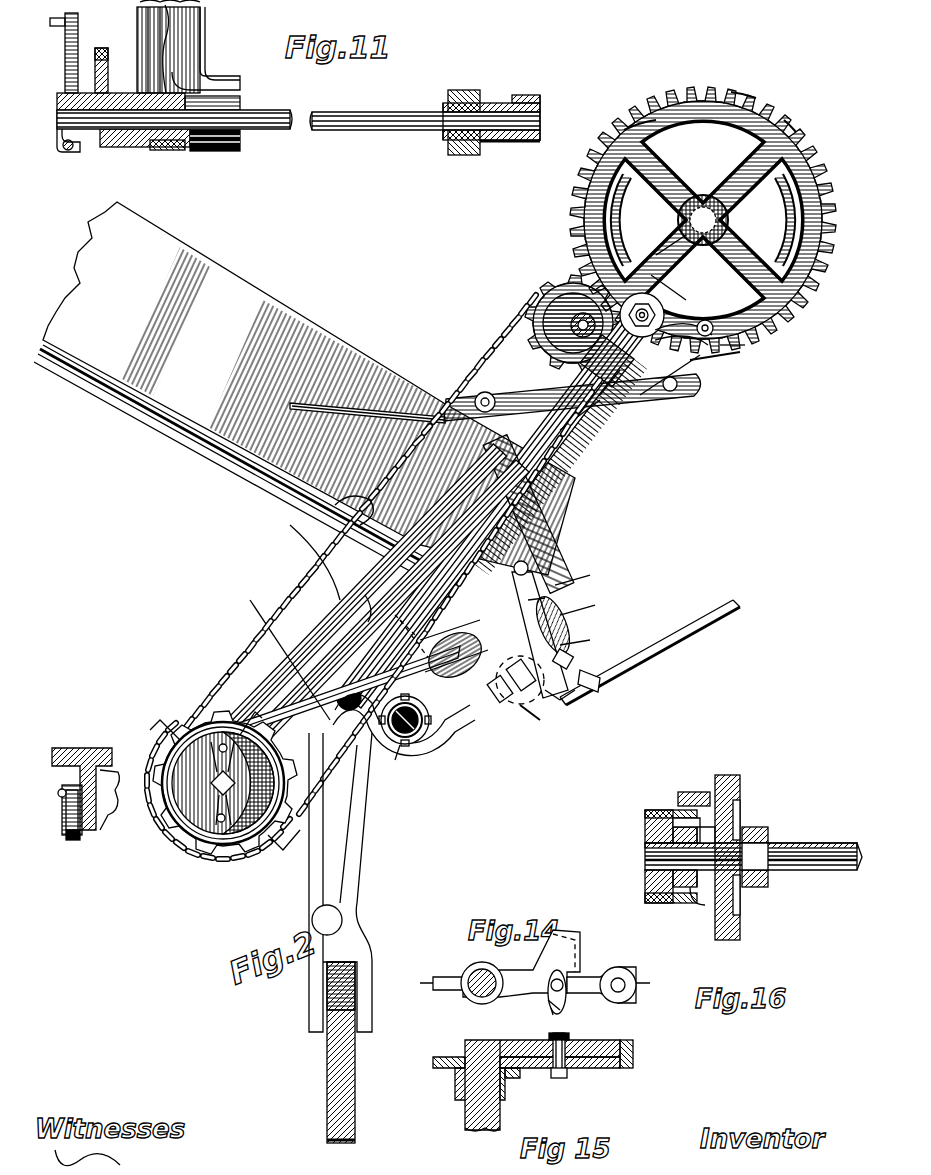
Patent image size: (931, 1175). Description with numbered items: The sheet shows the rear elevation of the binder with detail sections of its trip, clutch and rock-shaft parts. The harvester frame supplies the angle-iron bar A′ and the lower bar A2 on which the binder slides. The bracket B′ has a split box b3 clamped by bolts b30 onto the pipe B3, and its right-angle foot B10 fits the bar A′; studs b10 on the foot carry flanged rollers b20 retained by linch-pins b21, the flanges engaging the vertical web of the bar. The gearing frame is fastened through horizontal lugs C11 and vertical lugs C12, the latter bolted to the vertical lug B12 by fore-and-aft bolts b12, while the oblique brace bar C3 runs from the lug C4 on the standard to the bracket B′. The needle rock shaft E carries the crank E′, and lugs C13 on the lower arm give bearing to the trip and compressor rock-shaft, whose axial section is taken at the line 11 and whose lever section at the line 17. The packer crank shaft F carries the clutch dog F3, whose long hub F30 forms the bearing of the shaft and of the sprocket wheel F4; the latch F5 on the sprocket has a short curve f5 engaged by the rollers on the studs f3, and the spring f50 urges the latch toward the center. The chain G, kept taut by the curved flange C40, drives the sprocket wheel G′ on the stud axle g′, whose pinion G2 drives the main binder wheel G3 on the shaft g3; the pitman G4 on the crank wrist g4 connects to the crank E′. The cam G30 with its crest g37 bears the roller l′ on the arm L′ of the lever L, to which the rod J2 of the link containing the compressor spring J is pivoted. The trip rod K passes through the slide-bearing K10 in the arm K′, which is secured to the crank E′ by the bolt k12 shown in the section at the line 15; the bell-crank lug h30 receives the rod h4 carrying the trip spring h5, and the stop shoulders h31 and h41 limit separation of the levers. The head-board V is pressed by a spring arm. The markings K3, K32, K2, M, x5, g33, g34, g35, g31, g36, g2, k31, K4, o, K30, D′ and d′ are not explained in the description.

In FIG. 11, the post of clutch bracket K3 is at (78, 40).
In FIG. 2, the post of clutch bracket K3 is at (568, 636).
In FIG. 11, the arm K′ is at (108, 62).
In FIG. 14, the arm K′ is at (512, 992).
In FIG. 15, the arm K′ is at (514, 1070).
In FIG. 11, the section line 17 is at (158, 165).
In FIG. 11, the clutch base K32 is at (128, 137).
In FIG. 11, the lugs C13 is at (173, 152).
In FIG. 2, the lugs C13 is at (535, 695).
In FIG. 11, the trip rod K is at (272, 130).
In FIG. 2, the trip rod K is at (606, 642).
In FIG. 11, the sleeve K2 is at (505, 148).
In FIG. 2, the head-board V is at (248, 343).
In FIG. 2, the rail M is at (230, 460).
In FIG. 2, the lever rod x5 is at (307, 405).
In FIG. 2, the cam G30 is at (703, 220).
In FIG. 2, the shaft g3 is at (707, 195).
In FIG. 2, the gear rim segment g33 is at (636, 128).
In FIG. 2, the gear rim segment g34 is at (736, 92).
In FIG. 2, the gear rim segment g35 is at (790, 120).
In FIG. 2, the gear spoke g31 is at (659, 277).
In FIG. 2, the gear rim g36 is at (709, 220).
In FIG. 2, the gear arm g2 is at (669, 274).
In FIG. 2, the sprocket wheel G′ is at (537, 298).
In FIG. 2, the stud axle g′ is at (556, 262).
In FIG. 2, the gear pinion G2 is at (520, 327).
In FIG. 2, the lever L is at (660, 392).
In FIG. 2, the anti-friction roller l′ is at (735, 326).
In FIG. 2, the crank wrist g4 is at (712, 337).
In FIG. 2, the lever arm L′ is at (728, 357).
In FIG. 2, the main binder wheel G3 is at (760, 330).
In FIG. 2, the crest of cam g37 is at (740, 345).
In FIG. 2, the lug C4 is at (563, 434).
In FIG. 2, the rod J2 is at (510, 430).
In FIG. 2, the pitman G4 is at (545, 436).
In FIG. 2, the horizontal lugs C11 is at (560, 480).
In FIG. 2, the vertical lug B12 is at (357, 618).
In FIG. 2, the fore-and-aft bolts b12 is at (390, 625).
In FIG. 2, the bracket B′ is at (300, 700).
In FIG. 16, the bracket B′ is at (774, 837).
In FIG. 2, the vertical lugs C12 is at (345, 585).
In FIG. 2, the chain G is at (300, 776).
In FIG. 2, the curved flange C40 is at (345, 516).
In FIG. 2, the slide-bearing K10 is at (295, 530).
In FIG. 2, the oblique brace bar C3 is at (370, 612).
In FIG. 2, the compressor spring J is at (560, 545).
In FIG. 2, the trip spring h5 is at (565, 608).
In FIG. 2, the pin k31 is at (545, 598).
In FIG. 2, the arm K4 is at (575, 612).
In FIG. 2, the rod h4 is at (578, 662).
In FIG. 2, the rod o is at (712, 627).
In FIG. 2, the lug h30 is at (602, 690).
In FIG. 2, the stop shoulder h31 is at (578, 700).
In FIG. 2, the bolts b30 is at (510, 700).
In FIG. 2, the link K30 is at (545, 725).
In FIG. 2, the stop shoulder h41 is at (552, 700).
In FIG. 2, the split boxes b3 is at (432, 730).
In FIG. 2, the pipe B3 is at (410, 745).
In FIG. 2, the section line 11 is at (440, 775).
In FIG. 2, the column guide D′ is at (343, 935).
In FIG. 2, the column rod d′ is at (355, 985).
In FIG. 2, the fore-and-aft bar A2 is at (340, 1097).
In FIG. 2, the packer crank shaft F is at (185, 860).
In FIG. 16, the packer crank shaft F is at (808, 868).
In FIG. 2, the studs f3 is at (217, 742).
In FIG. 16, the studs f3 is at (658, 810).
In FIG. 2, the short curve f5 is at (226, 744).
In FIG. 2, the latch F5 is at (200, 738).
In FIG. 16, the latch F5 is at (700, 895).
In FIG. 2, the spring f50 is at (252, 714).
In FIG. 16, the spring f50 is at (705, 833).
In FIG. 2, the clutch dog F3 is at (232, 842).
In FIG. 16, the clutch dog F3 is at (648, 873).
In FIG. 2, the sprocket wheel F4 is at (270, 835).
In FIG. 16, the sprocket wheel F4 is at (733, 923).
In FIG. 2, the angle-iron bar A′ is at (73, 762).
In FIG. 2, the right-angle foot B10 is at (100, 800).
In FIG. 2, the studs b10 is at (68, 805).
In FIG. 2, the linch-pins b21 is at (60, 790).
In FIG. 2, the flanged rollers b20 is at (75, 842).
In FIG. 14, the crank E′ is at (606, 975).
In FIG. 15, the crank E′ is at (600, 1062).
In FIG. 14, the section line 15 is at (536, 984).
In FIG. 14, the bolt k12 is at (568, 1000).
In FIG. 15, the bolt k12 is at (566, 1072).
In FIG. 15, the needle-rock-shaft E is at (480, 1100).
In FIG. 16, the hub F30 is at (748, 835).